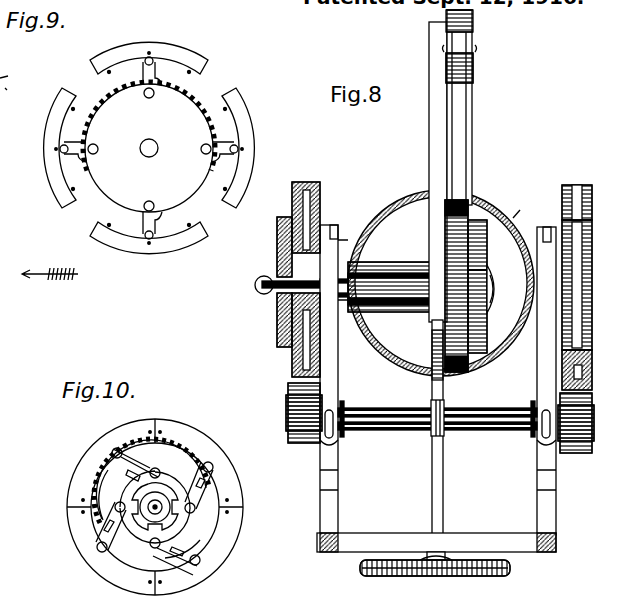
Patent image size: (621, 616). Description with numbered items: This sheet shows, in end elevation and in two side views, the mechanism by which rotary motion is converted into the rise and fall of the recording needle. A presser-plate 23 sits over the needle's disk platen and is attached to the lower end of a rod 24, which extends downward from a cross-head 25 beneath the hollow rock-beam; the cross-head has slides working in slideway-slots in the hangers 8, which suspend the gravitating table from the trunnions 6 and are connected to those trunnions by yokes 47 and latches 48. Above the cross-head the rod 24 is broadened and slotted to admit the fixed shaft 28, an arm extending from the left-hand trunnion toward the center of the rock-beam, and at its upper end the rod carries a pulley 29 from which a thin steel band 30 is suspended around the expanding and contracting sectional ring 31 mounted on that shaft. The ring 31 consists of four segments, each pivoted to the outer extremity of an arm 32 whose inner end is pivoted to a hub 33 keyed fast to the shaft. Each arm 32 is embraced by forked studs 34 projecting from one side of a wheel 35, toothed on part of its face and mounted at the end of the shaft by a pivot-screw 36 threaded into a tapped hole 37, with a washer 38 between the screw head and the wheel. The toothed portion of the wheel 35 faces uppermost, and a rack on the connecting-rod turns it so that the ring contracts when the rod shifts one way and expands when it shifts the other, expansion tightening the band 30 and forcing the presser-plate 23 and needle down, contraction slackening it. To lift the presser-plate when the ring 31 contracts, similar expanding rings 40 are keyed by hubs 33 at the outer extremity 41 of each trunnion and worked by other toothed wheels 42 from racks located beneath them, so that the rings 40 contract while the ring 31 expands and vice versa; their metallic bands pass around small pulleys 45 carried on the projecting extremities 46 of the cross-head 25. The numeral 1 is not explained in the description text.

In FIG. 8, the rim 1 is at (520, 208).
In FIG. 8, the trunnions 6 is at (330, 240).
In FIG. 8, the hangers 8 is at (316, 486).
In FIG. 8, the presser-plate 23 is at (362, 566).
In FIG. 8, the rod 24 is at (430, 126).
In FIG. 8, the cross-head 25 is at (380, 404).
In FIG. 8, the fixed shaft 28 is at (396, 312).
In FIG. 8, the pulley 29 is at (473, 22).
In FIG. 8, the thin steel band 30 is at (466, 150).
In FIG. 9, the expanding and contracting sectional ring 31 is at (243, 116).
In FIG. 10, the expanding and contracting sectional ring 31 is at (228, 472).
In FIG. 8, the expanding and contracting sectional ring 31 is at (495, 208).
In FIG. 9, the arm 32 is at (168, 209).
In FIG. 10, the arm 32 is at (150, 514).
In FIG. 10, the hub 33 is at (178, 520).
In FIG. 8, the hub 33 is at (456, 286).
In FIG. 10, the forked studs 34 is at (140, 447).
In FIG. 9, the wheel 35 is at (149, 147).
In FIG. 10, the wheel 35 is at (151, 481).
In FIG. 8, the wheel 35 is at (487, 330).
In FIG. 8, the pivot-screw 36 is at (499, 292).
In FIG. 10, the tapped hole 37 is at (153, 509).
In FIG. 8, the washer 38 is at (487, 262).
In FIG. 8, the expanding and contracting rings 40 is at (320, 190).
In FIG. 8, the outer extremity 41 is at (277, 340).
In FIG. 8, the toothed wheels 42 is at (277, 248).
In FIG. 8, the small pulleys 45 is at (290, 443).
In FIG. 8, the projecting extremities 46 is at (286, 422).
In FIG. 8, the yokes 47 is at (547, 227).
In FIG. 8, the latches 48 is at (437, 339).